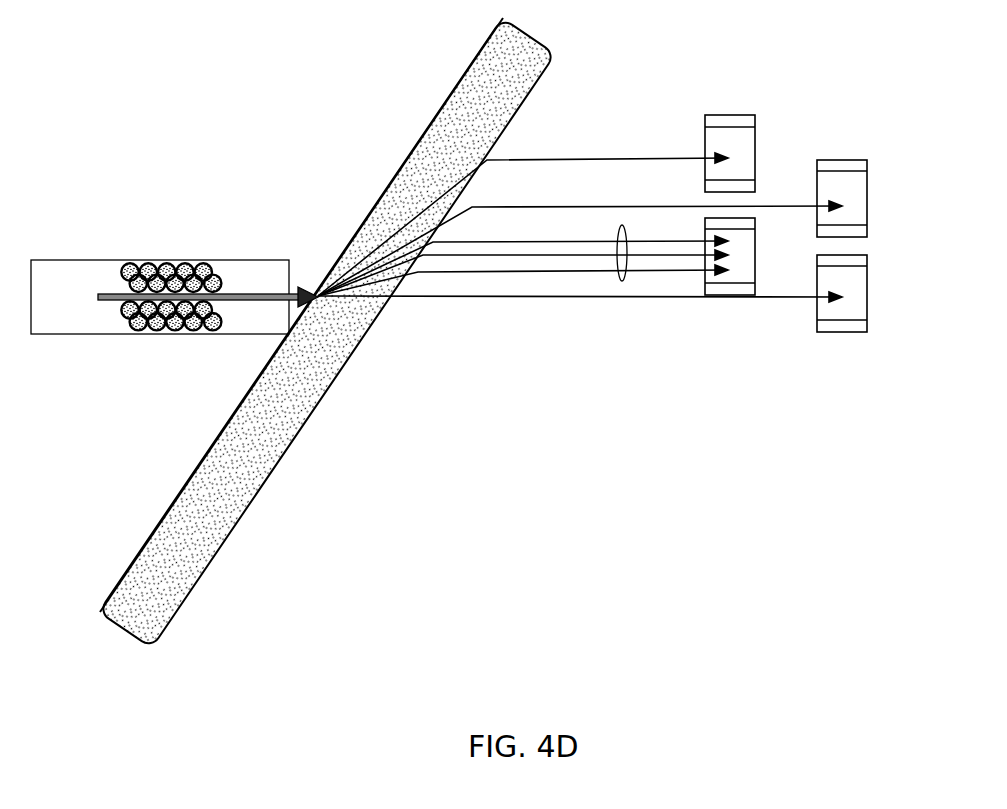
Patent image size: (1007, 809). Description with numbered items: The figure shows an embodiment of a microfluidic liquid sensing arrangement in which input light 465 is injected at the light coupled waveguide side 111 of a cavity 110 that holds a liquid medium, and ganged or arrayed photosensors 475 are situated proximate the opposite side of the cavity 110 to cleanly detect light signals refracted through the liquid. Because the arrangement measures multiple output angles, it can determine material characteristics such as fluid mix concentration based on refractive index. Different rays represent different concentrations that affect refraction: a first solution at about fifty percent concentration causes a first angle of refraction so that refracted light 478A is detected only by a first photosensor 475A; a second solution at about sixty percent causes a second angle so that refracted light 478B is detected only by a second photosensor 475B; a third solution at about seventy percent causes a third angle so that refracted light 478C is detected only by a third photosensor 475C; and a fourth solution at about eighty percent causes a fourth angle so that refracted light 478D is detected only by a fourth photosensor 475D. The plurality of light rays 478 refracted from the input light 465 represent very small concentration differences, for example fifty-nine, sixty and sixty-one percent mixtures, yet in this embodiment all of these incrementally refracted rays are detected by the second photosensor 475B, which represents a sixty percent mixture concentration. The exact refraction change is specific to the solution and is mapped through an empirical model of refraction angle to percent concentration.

The cavity 110 is at (125, 613).
The light coupled waveguide side 111 is at (153, 537).
The input light 465 is at (108, 293).
The ganged photosensors 475 is at (826, 225).
The first photosensor 475A is at (840, 321).
The second photosensor 475B is at (755, 288).
The third photosensor 475C is at (843, 160).
The fourth photosensor 475D is at (728, 115).
The plurality of light rays 478 is at (617, 235).
The first refracted light 478A is at (428, 298).
The second refracted light 478B is at (505, 273).
The third refracted light 478C is at (662, 205).
The fourth refracted light 478D is at (623, 157).